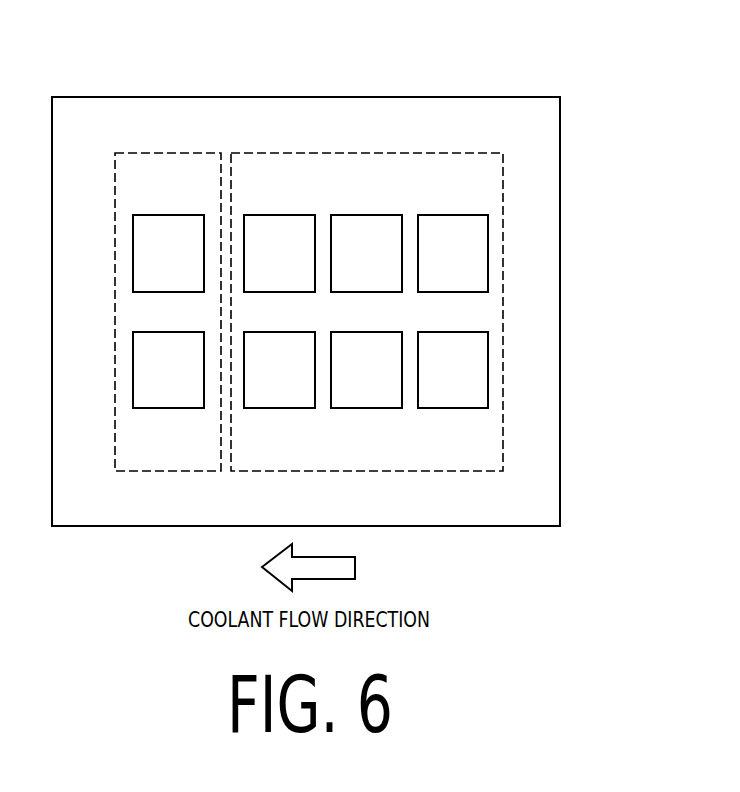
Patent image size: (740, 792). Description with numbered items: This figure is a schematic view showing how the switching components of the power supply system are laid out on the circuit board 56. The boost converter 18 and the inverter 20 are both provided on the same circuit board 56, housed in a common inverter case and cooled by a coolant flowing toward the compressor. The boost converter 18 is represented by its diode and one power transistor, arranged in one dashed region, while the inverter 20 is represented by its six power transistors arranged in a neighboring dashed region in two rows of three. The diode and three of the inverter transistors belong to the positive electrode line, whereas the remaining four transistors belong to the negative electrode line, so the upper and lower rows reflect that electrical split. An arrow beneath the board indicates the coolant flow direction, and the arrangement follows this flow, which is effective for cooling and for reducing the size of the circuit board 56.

The boost converter 18 is at (166, 153).
The inverter 20 is at (364, 153).
The circuit board 56 is at (477, 97).